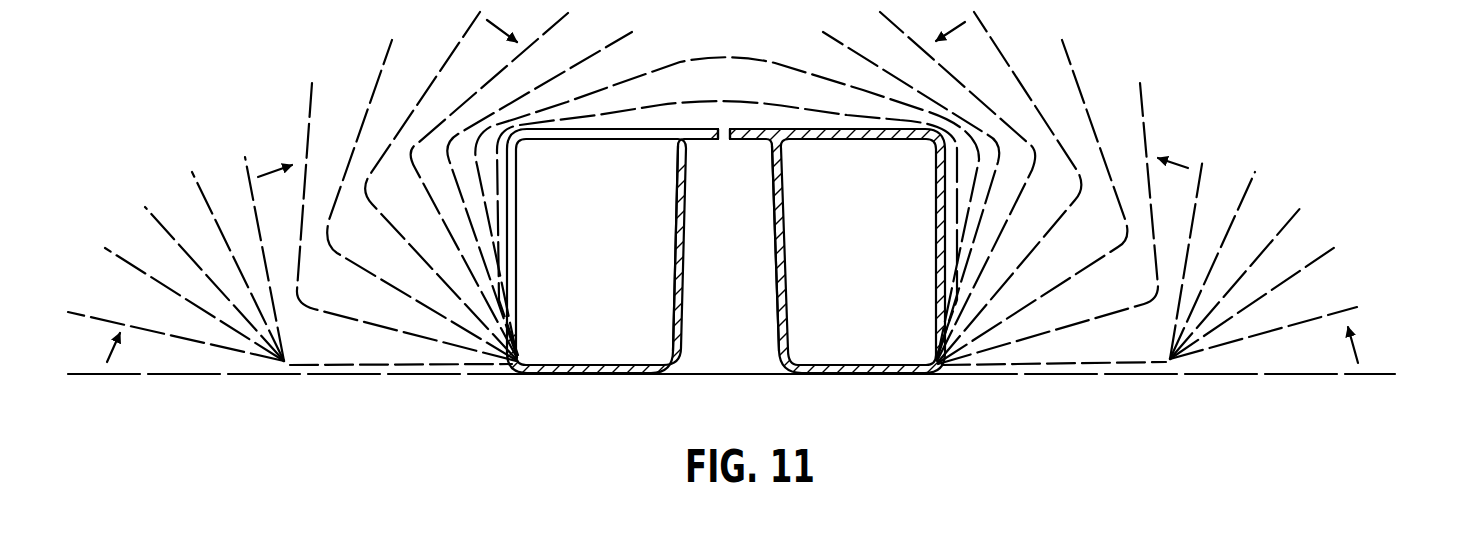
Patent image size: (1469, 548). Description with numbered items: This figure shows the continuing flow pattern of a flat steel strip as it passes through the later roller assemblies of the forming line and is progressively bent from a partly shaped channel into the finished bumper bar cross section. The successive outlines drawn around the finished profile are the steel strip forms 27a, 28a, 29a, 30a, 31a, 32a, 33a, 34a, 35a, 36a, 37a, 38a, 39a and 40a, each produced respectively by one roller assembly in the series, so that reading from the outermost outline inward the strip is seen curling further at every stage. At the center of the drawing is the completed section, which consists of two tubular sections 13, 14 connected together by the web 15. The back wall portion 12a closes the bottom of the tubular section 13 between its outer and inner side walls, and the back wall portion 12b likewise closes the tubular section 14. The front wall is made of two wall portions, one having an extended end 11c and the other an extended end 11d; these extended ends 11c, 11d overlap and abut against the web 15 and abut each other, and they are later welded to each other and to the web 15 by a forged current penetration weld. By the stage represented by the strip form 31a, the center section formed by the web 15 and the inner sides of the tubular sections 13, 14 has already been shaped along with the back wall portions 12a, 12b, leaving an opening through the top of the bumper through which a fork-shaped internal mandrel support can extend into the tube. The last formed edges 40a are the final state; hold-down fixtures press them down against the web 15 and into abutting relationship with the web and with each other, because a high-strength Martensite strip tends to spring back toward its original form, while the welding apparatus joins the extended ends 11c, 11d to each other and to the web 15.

The extended end 11c is at (683, 128).
The extended end 11d is at (750, 129).
The back wall portion 12a is at (587, 376).
The back wall portion 12b is at (822, 376).
The tubular section 13 is at (683, 293).
The tubular section 14 is at (767, 292).
The web 15 is at (733, 147).
The steel strip form 27a is at (997, 376).
The steel strip form 28a is at (1355, 305).
The steel strip form 29a is at (1337, 243).
The steel strip form 30a is at (1302, 203).
The steel strip form 31a is at (1253, 170).
The steel strip form 32a is at (1202, 158).
The steel strip form 33a is at (1075, 323).
The steel strip form 34a is at (1095, 260).
The steel strip form 35a is at (1075, 216).
The steel strip form 36a is at (1037, 160).
The steel strip form 37a is at (573, 140).
The steel strip form 38a is at (807, 73).
The steel strip form 39a is at (779, 106).
The last formed edges 40a is at (792, 140).